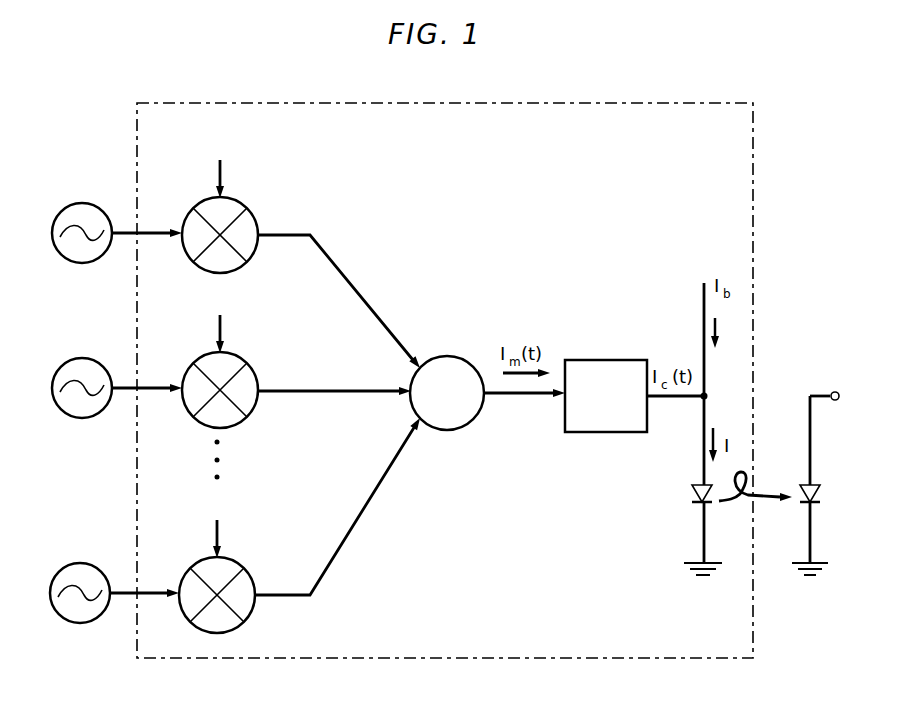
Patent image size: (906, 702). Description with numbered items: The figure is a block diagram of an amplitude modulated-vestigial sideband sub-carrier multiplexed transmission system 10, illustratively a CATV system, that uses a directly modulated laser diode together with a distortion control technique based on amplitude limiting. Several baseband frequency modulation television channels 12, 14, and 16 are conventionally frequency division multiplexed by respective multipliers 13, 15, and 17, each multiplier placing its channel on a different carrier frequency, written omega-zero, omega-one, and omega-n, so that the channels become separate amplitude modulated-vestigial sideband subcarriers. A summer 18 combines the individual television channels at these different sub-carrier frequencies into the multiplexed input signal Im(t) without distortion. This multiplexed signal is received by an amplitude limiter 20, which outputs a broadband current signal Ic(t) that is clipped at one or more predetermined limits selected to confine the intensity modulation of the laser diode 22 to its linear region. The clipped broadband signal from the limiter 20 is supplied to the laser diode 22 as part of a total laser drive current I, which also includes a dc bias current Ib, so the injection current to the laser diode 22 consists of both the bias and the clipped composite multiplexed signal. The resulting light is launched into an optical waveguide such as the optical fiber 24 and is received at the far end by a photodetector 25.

The transmission system 10 is at (756, 204).
The television channel 12 is at (62, 204).
The multiplier 13 is at (244, 202).
The television channel 14 is at (62, 366).
The multiplier 15 is at (244, 356).
The television channel 16 is at (60, 571).
The multiplier 17 is at (244, 560).
The summer 18 is at (444, 356).
The amplitude limiter 20 is at (610, 358).
The laser diode 22 is at (692, 494).
The optical fiber 24 is at (758, 494).
The photodetector 25 is at (816, 494).